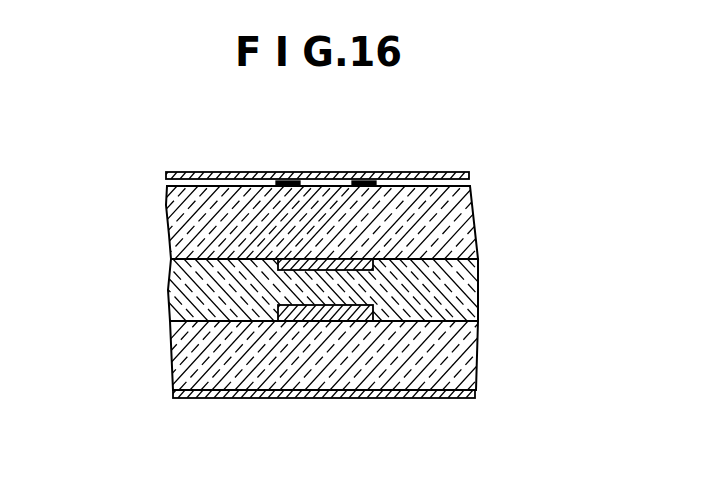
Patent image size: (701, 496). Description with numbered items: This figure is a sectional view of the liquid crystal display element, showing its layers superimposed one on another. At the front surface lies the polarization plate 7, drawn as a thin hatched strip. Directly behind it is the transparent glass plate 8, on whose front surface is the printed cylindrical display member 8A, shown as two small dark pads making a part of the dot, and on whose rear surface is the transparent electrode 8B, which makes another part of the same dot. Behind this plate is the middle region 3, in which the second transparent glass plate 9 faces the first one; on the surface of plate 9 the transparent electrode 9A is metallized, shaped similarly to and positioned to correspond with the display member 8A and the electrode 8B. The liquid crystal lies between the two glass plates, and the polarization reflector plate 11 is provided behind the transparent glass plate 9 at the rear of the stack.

The insulating intermediate layer 3 is at (177, 277).
The polarization plate 7 is at (422, 172).
The transparent glass plate 8 is at (457, 218).
The printed cylindrical display member 8A is at (360, 182).
The transparent electrode 8B is at (417, 272).
The transparent glass plate 9 is at (452, 353).
The transparent electrode 9A is at (417, 302).
The polarization reflector plate 11 is at (415, 398).